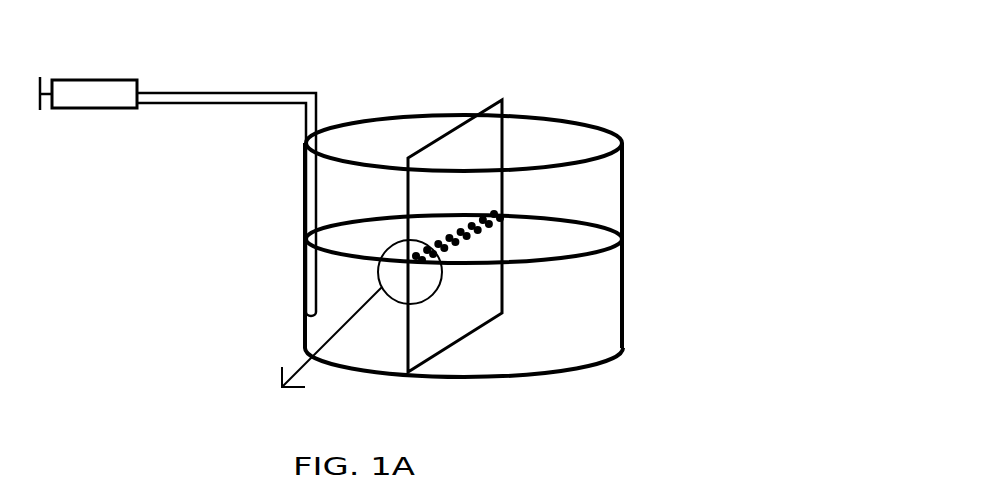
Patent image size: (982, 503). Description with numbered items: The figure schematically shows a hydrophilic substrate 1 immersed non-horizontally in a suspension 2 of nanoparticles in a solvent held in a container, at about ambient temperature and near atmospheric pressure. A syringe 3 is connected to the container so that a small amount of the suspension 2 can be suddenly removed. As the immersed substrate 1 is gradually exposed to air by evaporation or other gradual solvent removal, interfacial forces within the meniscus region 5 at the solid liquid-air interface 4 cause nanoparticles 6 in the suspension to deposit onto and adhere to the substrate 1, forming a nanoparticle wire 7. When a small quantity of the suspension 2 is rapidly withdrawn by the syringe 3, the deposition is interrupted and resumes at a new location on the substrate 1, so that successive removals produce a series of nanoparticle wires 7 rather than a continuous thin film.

The hydrophilic substrate 1 is at (473, 143).
The suspension 2 is at (698, 367).
The syringe 3 is at (80, 88).
The solid liquid-air interface 4 is at (587, 240).
The meniscus region 5 is at (598, 233).
The nanoparticles 6 is at (497, 213).
The nanoparticle wire 7 is at (453, 237).